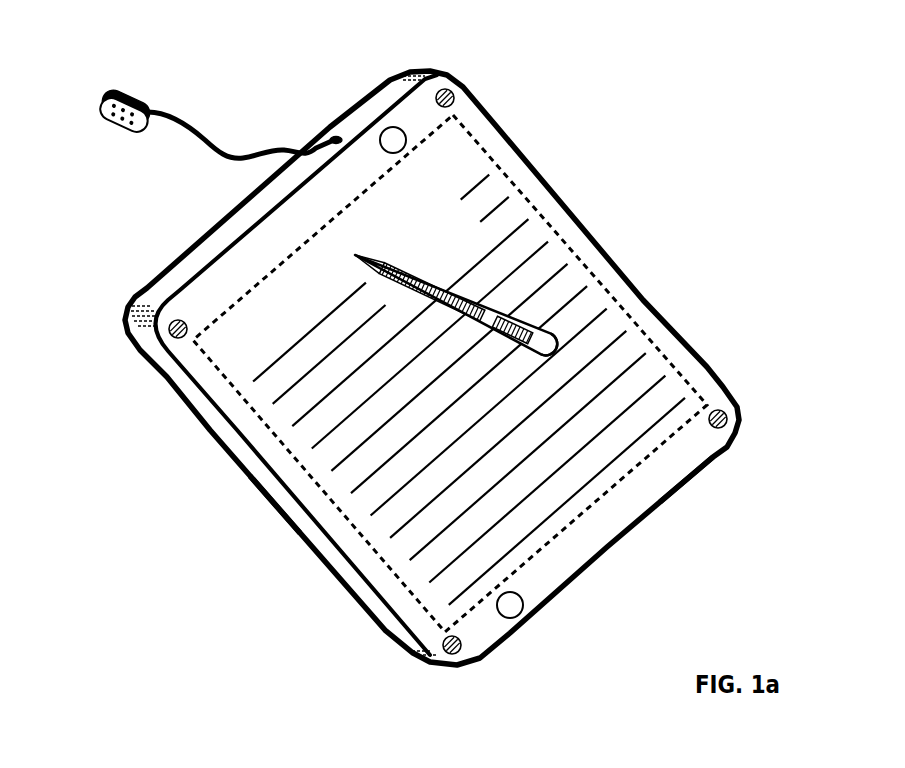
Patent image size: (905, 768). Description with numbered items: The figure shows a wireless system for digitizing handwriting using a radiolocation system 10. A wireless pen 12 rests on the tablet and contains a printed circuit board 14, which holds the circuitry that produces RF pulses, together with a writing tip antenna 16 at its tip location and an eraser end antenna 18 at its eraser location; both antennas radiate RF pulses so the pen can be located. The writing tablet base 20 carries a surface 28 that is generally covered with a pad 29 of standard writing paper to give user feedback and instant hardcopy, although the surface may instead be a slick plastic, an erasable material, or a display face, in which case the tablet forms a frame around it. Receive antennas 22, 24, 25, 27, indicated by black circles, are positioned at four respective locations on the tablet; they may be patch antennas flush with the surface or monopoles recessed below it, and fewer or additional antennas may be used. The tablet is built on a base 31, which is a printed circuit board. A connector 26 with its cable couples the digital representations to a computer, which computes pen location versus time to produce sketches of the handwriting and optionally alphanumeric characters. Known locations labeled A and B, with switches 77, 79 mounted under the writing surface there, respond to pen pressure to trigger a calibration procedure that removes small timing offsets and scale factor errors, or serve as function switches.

The radiolocation system 10 is at (604, 110).
The wireless pen 12 is at (498, 297).
The printed circuit board 14 is at (483, 309).
The writing tip antenna 16 is at (378, 258).
The eraser end antenna 18 is at (557, 345).
The writing tablet base 20 is at (190, 395).
The receive antenna 22 is at (170, 322).
The receive antenna 24 is at (440, 90).
The receive antenna 25 is at (716, 410).
The connector 26 is at (108, 125).
The receive antenna 27 is at (462, 645).
The surface 28 is at (683, 455).
The pad 29 is at (620, 482).
The base 31 is at (250, 477).
The switch 77 is at (386, 128).
The switch 79 is at (522, 593).